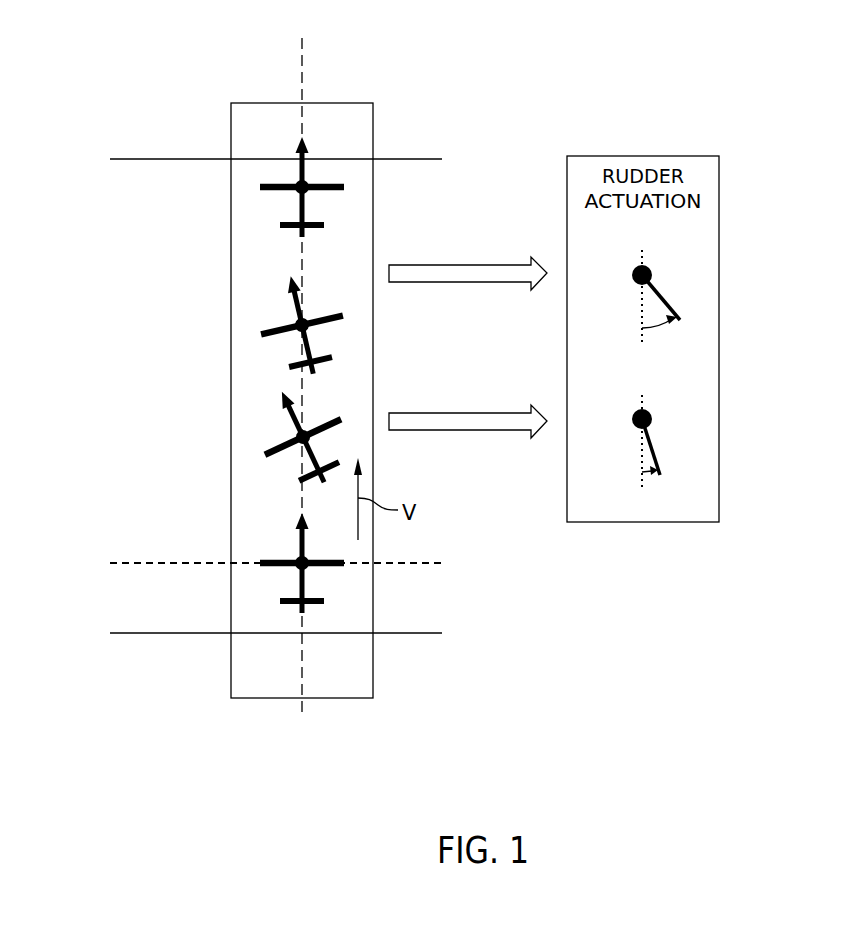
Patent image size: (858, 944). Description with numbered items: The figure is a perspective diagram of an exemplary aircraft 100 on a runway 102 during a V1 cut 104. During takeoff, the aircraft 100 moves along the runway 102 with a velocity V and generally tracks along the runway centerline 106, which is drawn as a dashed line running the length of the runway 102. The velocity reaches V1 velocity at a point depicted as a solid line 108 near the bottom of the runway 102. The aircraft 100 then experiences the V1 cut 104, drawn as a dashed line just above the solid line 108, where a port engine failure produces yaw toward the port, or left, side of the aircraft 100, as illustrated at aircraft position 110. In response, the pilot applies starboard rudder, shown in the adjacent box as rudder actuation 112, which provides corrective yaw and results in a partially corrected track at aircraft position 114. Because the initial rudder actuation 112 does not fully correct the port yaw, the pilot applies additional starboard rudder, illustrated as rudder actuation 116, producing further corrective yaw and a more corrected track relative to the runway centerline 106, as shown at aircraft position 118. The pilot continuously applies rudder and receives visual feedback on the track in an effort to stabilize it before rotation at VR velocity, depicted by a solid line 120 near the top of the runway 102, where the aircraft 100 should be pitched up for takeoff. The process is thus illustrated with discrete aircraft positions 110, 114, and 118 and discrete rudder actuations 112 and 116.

The aircraft 100 is at (270, 573).
The runway 102 is at (373, 113).
The V1 cut 104 is at (442, 563).
The runway centerline 106 is at (302, 63).
The solid line 108 is at (442, 633).
The aircraft position 110 is at (263, 455).
The rudder actuation 112 is at (688, 428).
The aircraft position 114 is at (260, 332).
The rudder actuation 116 is at (688, 288).
The aircraft position 118 is at (285, 193).
The solid line 120 is at (442, 159).